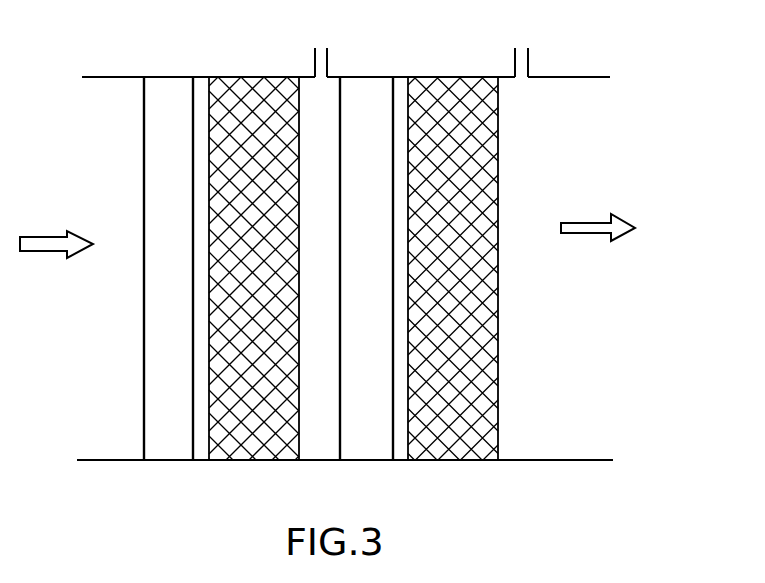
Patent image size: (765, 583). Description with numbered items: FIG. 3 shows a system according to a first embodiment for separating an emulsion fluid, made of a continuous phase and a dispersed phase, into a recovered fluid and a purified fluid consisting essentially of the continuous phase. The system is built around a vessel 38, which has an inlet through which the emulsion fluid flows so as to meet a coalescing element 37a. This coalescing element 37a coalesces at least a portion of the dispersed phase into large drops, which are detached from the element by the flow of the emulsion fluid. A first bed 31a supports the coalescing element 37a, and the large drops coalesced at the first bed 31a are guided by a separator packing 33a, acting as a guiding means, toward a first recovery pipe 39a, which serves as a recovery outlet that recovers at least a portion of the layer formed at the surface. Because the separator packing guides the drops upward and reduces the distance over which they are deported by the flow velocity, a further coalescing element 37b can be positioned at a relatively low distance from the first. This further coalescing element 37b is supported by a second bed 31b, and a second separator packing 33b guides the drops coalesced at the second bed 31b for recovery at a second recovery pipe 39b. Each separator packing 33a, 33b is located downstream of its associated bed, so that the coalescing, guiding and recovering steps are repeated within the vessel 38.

The first bed 31a is at (140, 123).
The second bed 31b is at (393, 133).
The separator packing 33a is at (208, 398).
The second separator packing 33b is at (498, 365).
The coalescing element 37a is at (172, 108).
The further coalescing element 37b is at (363, 110).
The vessel 38 is at (318, 460).
The first recovery pipe 39a is at (328, 64).
The second recovery pipe 39b is at (529, 62).